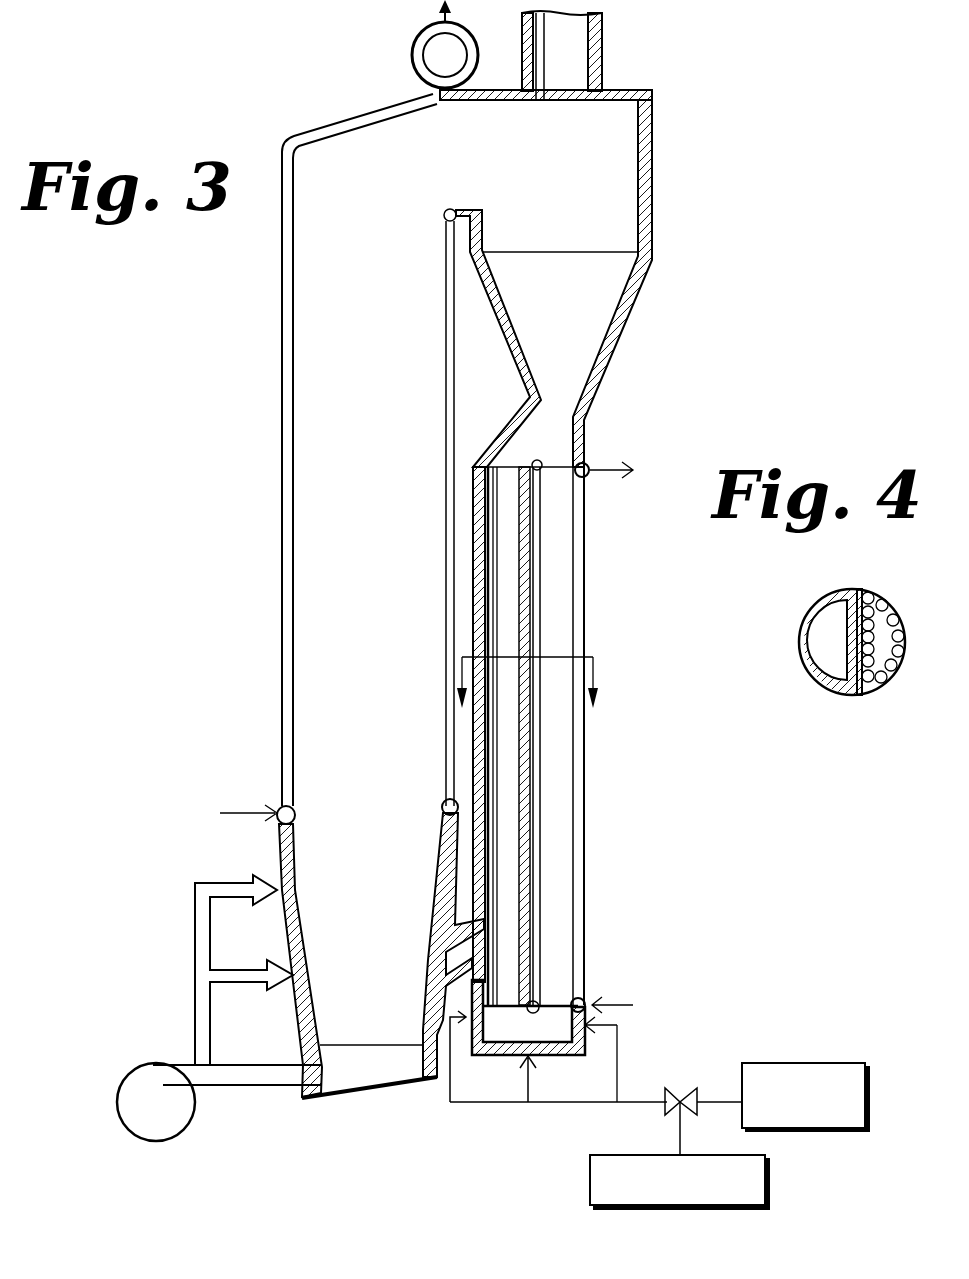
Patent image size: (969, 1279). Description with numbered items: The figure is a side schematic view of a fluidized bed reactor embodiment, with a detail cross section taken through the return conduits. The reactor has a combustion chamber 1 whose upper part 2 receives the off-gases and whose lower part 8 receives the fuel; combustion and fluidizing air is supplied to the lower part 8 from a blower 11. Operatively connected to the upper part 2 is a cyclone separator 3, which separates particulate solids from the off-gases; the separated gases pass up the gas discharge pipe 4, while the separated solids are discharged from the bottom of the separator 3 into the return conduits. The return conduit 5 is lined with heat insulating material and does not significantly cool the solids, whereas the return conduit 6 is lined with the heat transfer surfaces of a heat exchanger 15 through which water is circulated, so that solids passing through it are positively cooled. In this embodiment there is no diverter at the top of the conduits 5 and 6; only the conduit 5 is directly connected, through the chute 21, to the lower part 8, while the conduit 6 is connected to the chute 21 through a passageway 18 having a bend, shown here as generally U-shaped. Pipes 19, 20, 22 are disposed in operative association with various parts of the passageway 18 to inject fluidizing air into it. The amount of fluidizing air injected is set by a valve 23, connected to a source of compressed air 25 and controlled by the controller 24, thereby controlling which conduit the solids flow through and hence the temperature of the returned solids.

In FIG. 3, the combustion chamber 1 is at (300, 308).
In FIG. 3, the upper part 2 is at (357, 133).
In FIG. 3, the cyclone separator 3 is at (622, 152).
In FIG. 3, the gas discharge pipe 4 is at (532, 699).
In FIG. 3, the return conduit 5 is at (490, 518).
In FIG. 4, the return conduit 5 is at (817, 640).
In FIG. 3, the return conduit 6 is at (562, 584).
In FIG. 4, the return conduit 6 is at (875, 688).
In FIG. 3, the lower part 8 is at (322, 997).
In FIG. 3, the blower 11 is at (140, 1082).
In FIG. 3, the heat exchanger 15 is at (575, 825).
In FIG. 4, the heat exchanger 15 is at (882, 600).
In FIG. 3, the passageway 18 is at (542, 1030).
In FIG. 3, the pipe 19 is at (540, 1085).
In FIG. 3, the pipe 20 is at (617, 1058).
In FIG. 3, the chute 21 is at (428, 953).
In FIG. 3, the pipe 22 is at (442, 1087).
In FIG. 3, the valve 23 is at (695, 1097).
In FIG. 3, the controller 24 is at (713, 1208).
In FIG. 3, the source of compressed air 25 is at (823, 1078).